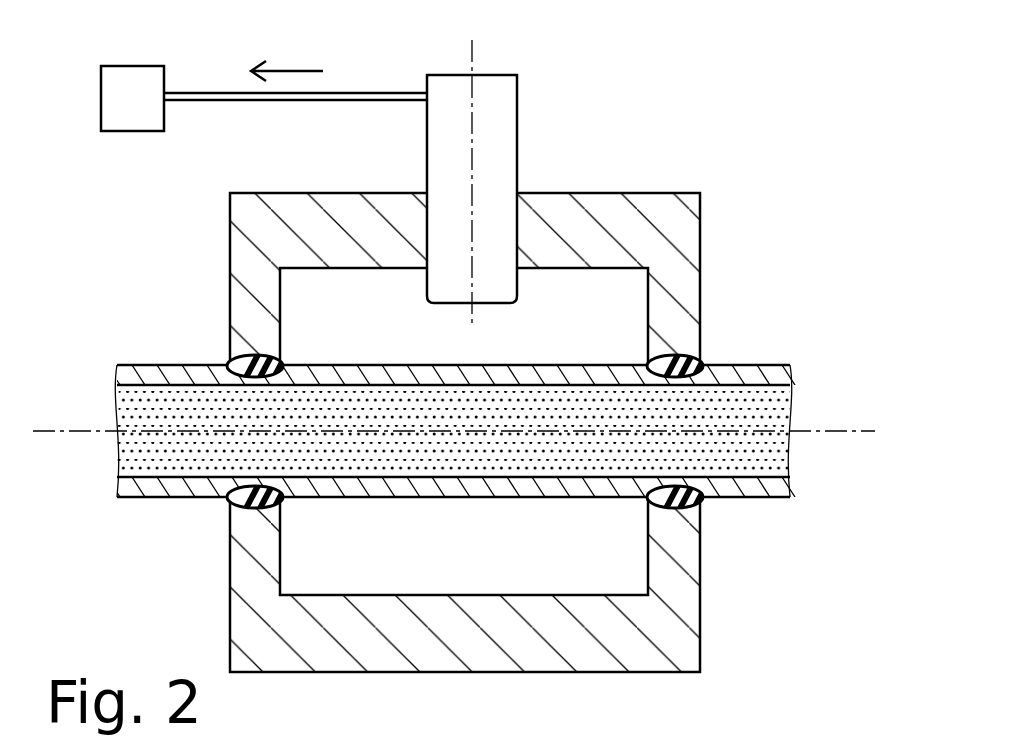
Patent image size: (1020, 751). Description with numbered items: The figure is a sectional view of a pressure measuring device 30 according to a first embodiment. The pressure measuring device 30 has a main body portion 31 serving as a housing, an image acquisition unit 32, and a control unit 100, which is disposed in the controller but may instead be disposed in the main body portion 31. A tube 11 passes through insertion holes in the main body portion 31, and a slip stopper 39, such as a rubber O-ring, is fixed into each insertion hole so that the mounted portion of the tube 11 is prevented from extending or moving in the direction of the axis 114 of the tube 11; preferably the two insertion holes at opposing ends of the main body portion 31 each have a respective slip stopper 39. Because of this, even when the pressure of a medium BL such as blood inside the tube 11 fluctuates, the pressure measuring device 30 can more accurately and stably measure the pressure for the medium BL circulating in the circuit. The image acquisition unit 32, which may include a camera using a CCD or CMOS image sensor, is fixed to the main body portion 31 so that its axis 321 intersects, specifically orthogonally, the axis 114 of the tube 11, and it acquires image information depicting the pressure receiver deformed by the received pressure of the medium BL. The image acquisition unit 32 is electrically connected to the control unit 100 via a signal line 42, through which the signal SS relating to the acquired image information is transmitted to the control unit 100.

The control unit 100 is at (131, 80).
The signal line 42 is at (293, 102).
The signal SS is at (290, 71).
The axis of the image acquisition unit 321 is at (472, 58).
The image acquisition unit 32 is at (498, 145).
The pressure measuring device 30 is at (682, 90).
The main body portion 31 is at (666, 228).
The slip stopper 39 is at (258, 360).
The tube 11 is at (753, 372).
The medium BL is at (766, 450).
The axis of the tube 114 is at (62, 430).